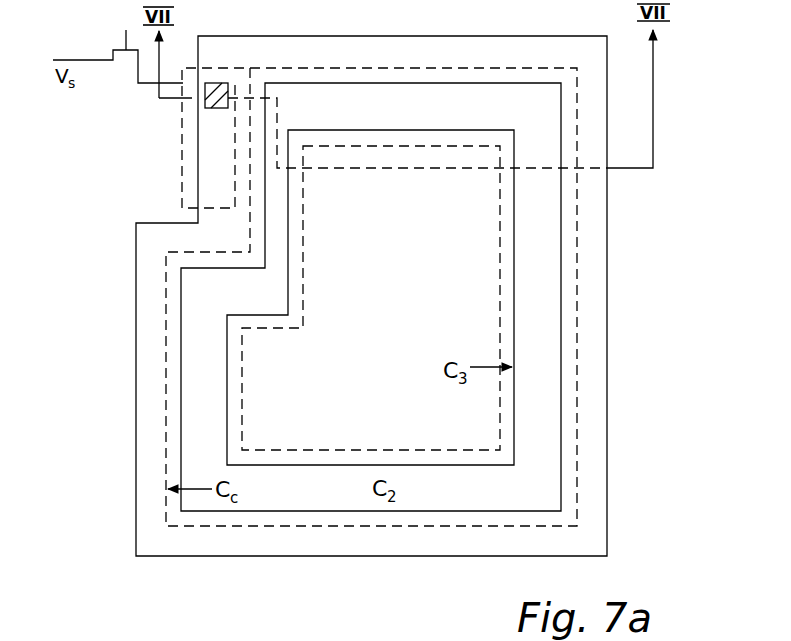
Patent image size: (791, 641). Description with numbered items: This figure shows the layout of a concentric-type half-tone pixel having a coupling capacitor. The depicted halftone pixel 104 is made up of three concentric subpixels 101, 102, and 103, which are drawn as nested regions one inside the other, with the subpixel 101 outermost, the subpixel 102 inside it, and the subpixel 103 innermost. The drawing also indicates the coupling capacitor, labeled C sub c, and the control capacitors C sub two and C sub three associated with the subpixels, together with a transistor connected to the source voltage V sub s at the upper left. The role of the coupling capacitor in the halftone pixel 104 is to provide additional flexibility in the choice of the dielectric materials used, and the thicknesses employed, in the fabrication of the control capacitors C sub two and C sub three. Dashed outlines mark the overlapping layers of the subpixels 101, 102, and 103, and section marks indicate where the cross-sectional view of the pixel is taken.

The subpixel 101 is at (429, 64).
The subpixel 102 is at (429, 119).
The subpixel 103 is at (430, 306).
The halftone pixel 104 is at (640, 231).